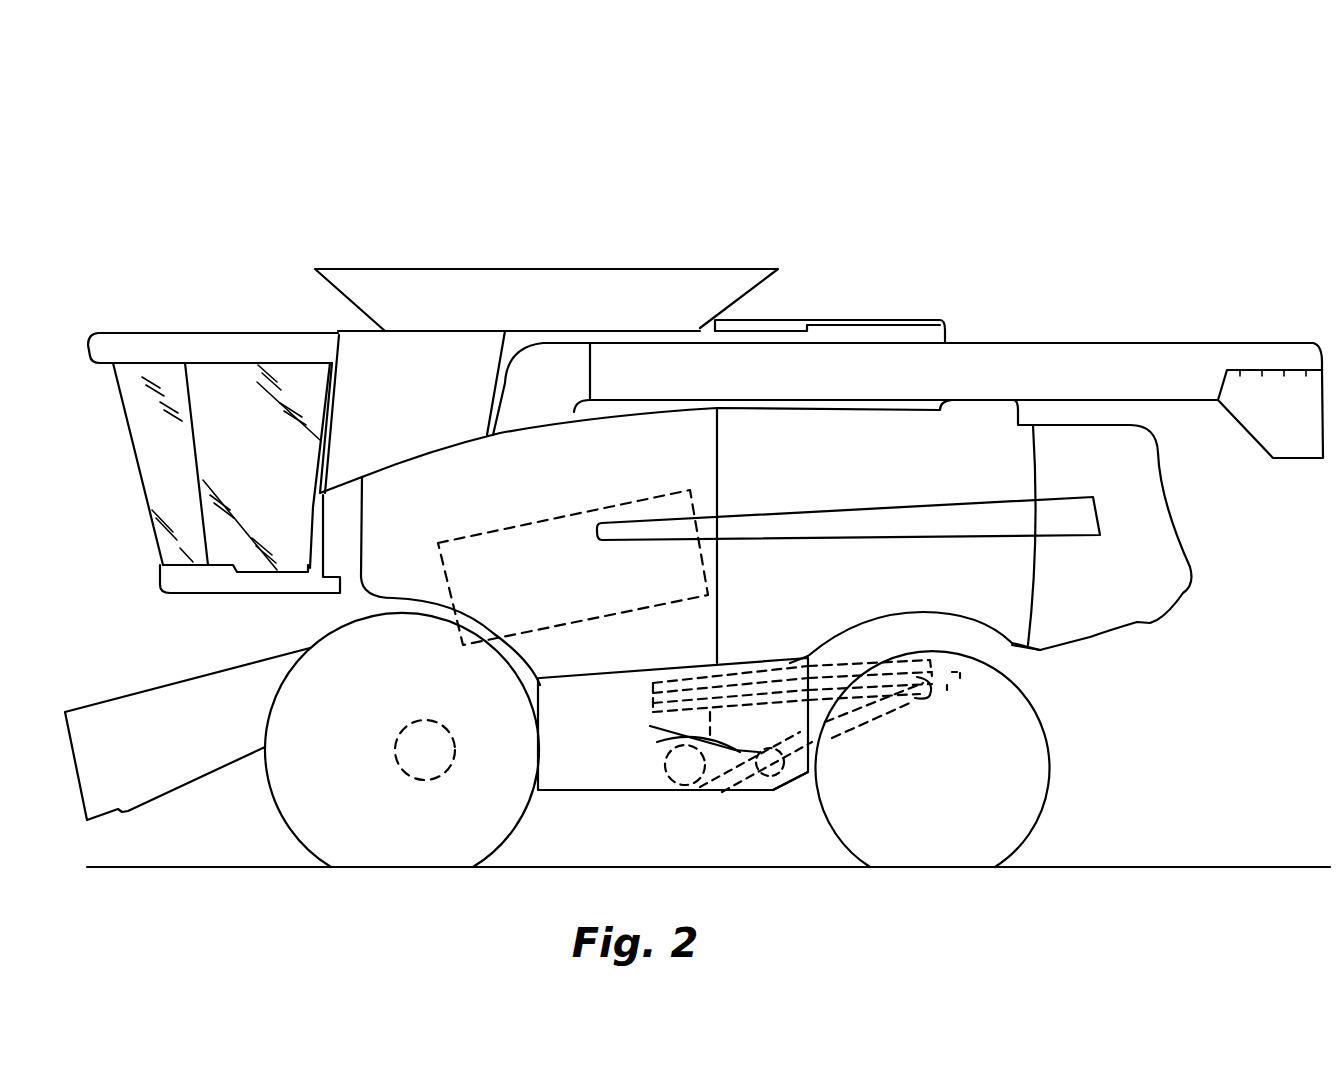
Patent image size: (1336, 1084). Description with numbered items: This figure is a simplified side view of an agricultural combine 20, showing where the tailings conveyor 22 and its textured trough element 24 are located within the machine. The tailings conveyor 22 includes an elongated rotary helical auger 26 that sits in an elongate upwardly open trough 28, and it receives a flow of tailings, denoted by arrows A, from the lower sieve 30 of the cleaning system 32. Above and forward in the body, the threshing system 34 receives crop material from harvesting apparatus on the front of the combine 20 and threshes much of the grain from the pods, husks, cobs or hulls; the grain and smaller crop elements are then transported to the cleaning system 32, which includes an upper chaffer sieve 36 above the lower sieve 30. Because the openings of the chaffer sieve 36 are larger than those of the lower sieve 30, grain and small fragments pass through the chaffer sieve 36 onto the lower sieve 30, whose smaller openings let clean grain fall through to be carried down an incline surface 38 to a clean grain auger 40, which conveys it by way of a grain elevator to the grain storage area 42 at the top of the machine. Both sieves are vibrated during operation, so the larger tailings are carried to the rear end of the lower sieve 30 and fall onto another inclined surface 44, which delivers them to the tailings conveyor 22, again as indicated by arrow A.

The agricultural combine 20 is at (1030, 152).
The tailings conveyor 22 is at (742, 775).
The textured trough element 24 is at (770, 782).
The elongated rotary helical auger 26 is at (650, 726).
The elongate upwardly open trough 28 is at (808, 772).
The lower sieve 30 is at (832, 688).
The cleaning system 32 is at (647, 701).
The threshing system 34 is at (703, 487).
The upper chaffer sieve 36 is at (868, 662).
The incline surface 38 is at (657, 742).
The clean grain auger 40 is at (668, 785).
The grain storage area 42 is at (585, 268).
The inclined surface 44 is at (947, 690).
The arrows denoting flow of tailings A is at (886, 708).